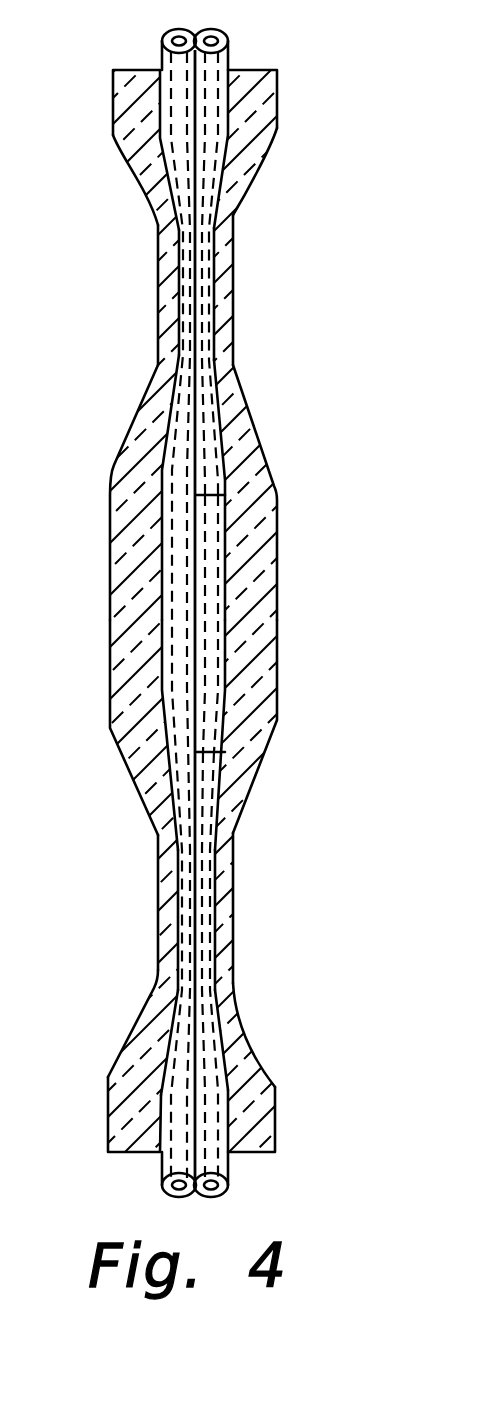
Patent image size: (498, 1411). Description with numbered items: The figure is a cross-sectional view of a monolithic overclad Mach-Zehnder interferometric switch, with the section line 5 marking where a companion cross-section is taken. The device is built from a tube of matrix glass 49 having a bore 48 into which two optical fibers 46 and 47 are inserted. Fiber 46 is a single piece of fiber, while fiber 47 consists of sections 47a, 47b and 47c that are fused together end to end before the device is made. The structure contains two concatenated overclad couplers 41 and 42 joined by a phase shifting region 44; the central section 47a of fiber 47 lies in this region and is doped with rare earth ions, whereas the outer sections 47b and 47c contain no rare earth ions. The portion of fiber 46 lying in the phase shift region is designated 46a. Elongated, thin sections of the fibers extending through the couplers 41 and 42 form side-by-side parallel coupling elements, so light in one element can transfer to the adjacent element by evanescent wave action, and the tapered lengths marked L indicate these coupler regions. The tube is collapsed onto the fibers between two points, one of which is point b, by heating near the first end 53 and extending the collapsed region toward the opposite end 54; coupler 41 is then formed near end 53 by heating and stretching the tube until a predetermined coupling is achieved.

The overclad coupler 41 is at (310, 933).
The overclad coupler 42 is at (306, 323).
The phase shifting region 44 is at (289, 568).
The optical fiber 46 is at (178, 1160).
The phase shift region of fiber 46 46a is at (160, 530).
The optical fiber 47 is at (244, 1183).
The fiber section 47a is at (228, 528).
The fiber section 47b is at (208, 435).
The fiber section 47c is at (208, 780).
The bore 48 is at (230, 93).
The tube of matrix glass 49 is at (344, 714).
The first end of tube 53 is at (258, 1153).
The end of tube 54 is at (133, 69).
The point b is at (275, 1094).
The length of tapered region L is at (285, 443).
The section line 5- 5 is at (76, 601).